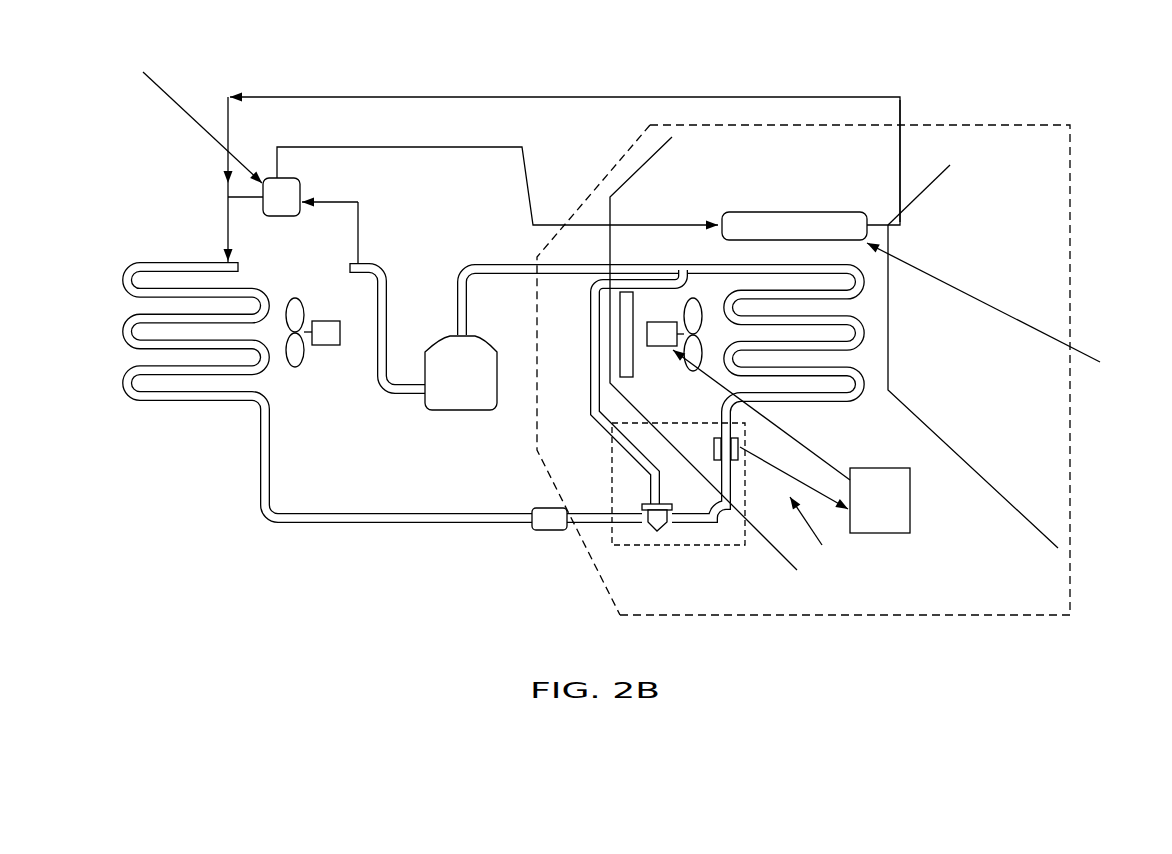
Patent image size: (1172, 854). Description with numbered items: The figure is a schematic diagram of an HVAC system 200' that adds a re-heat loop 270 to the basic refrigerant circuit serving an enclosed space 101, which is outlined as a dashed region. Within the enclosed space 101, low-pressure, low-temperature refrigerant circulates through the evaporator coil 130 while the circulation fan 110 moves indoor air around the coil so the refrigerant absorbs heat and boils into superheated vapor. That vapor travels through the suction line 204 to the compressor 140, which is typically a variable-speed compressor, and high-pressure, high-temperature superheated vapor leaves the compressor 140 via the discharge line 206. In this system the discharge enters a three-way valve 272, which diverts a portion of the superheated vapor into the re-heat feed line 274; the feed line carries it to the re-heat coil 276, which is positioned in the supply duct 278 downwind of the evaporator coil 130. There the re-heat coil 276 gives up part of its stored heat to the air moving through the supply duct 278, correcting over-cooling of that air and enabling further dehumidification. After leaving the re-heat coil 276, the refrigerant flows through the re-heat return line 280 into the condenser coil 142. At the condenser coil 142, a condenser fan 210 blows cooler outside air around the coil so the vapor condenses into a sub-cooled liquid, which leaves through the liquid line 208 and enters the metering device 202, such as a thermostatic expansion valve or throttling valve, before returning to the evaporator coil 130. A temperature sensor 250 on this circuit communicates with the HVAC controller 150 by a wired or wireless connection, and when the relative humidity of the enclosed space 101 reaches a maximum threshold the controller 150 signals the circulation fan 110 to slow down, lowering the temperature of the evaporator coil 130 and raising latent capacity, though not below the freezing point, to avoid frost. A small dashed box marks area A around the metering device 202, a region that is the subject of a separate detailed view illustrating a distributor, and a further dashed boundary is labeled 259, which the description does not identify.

The HVAC system 200' is at (138, 136).
The enclosed space 101 is at (1073, 372).
The circulation fan 110 is at (663, 337).
The evaporator coil 130 is at (858, 402).
The compressor 140 is at (455, 412).
The condenser coil 142 is at (186, 402).
The HVAC controller 150 is at (912, 505).
The metering device 202 is at (655, 532).
The suction line 204 is at (490, 275).
The discharge line 206 is at (383, 273).
The liquid line 208 is at (385, 525).
The condenser fan 210 is at (328, 338).
The temperature sensor 250 is at (738, 450).
The insulated wall region 259 is at (596, 183).
The re-heat loop 270 is at (900, 113).
The three-way valve 272 is at (192, 116).
The re-heat feed line 274 is at (383, 147).
The re-heat coil 276 is at (1073, 348).
The supply duct 278 is at (921, 199).
The re-heat return line 280 is at (573, 97).
The area A is at (715, 547).